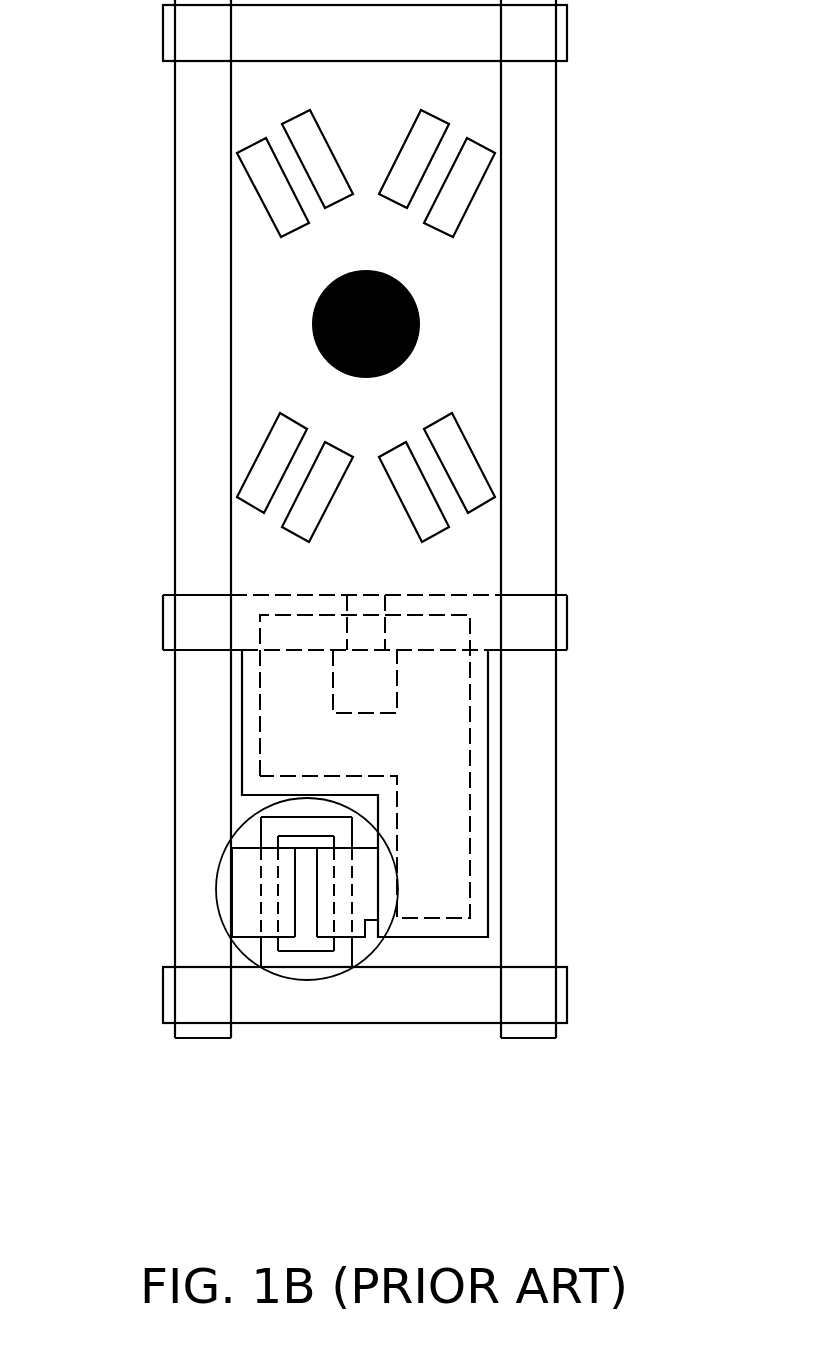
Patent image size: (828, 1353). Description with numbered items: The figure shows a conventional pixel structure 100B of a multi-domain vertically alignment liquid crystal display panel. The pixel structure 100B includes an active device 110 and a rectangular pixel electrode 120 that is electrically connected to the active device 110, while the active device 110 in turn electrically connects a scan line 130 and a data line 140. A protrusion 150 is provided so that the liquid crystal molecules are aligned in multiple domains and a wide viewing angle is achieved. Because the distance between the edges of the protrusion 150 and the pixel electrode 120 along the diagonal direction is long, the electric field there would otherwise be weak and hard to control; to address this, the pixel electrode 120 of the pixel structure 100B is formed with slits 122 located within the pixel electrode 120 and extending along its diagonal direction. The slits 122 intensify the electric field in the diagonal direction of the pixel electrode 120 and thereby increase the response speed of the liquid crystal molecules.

The pixel structure 100B is at (731, 1143).
The active device 110 is at (222, 920).
The pixel electrode 120 is at (252, 403).
The slit 122 is at (275, 190).
The scan line 130 is at (292, 1002).
The data line 140 is at (197, 707).
The protrusion 150 is at (320, 292).